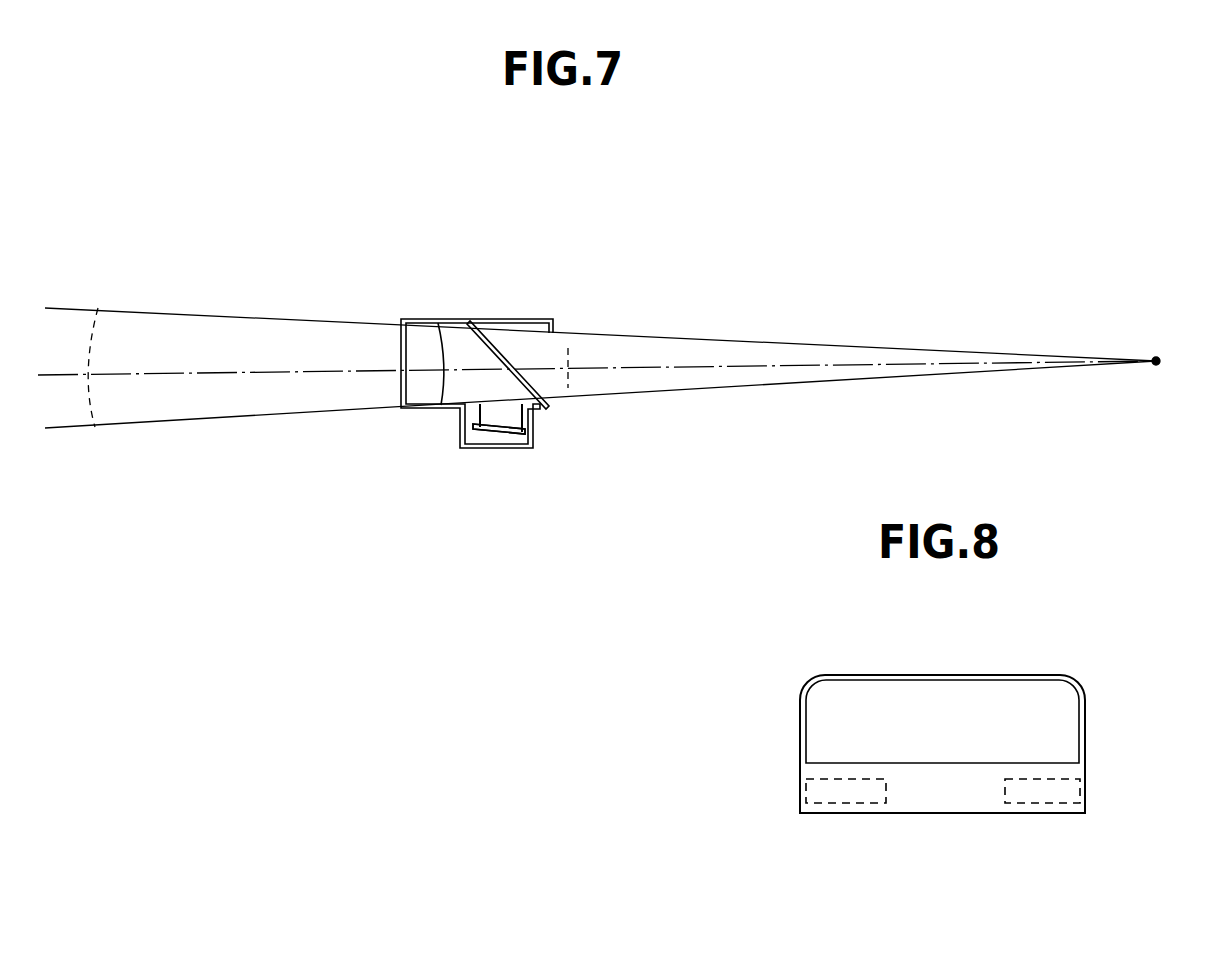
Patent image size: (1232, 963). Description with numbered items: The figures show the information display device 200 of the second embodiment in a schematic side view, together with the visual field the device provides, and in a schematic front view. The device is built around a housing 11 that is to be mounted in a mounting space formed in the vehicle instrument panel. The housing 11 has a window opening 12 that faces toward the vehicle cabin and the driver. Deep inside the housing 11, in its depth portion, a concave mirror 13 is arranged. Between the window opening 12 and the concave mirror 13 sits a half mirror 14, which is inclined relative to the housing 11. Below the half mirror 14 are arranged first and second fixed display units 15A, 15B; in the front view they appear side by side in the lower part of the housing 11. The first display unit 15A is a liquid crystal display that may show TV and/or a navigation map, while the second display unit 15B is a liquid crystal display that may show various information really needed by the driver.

In FIG. 7, the information display device 200 is at (640, 142).
In FIG. 8, the information display device 200 is at (1170, 618).
In FIG. 7, the housing 11 is at (478, 318).
In FIG. 8, the housing 11 is at (898, 677).
In FIG. 7, the window opening 12 is at (557, 353).
In FIG. 8, the window opening 12 is at (1007, 690).
In FIG. 7, the concave mirror 13 is at (438, 338).
In FIG. 7, the half mirror 14 is at (497, 352).
In FIG. 7, the first fixed display unit 15A is at (497, 433).
In FIG. 8, the first fixed display unit 15A is at (830, 803).
In FIG. 7, the second fixed display unit 15B is at (510, 478).
In FIG. 8, the second fixed display unit 15B is at (1043, 802).